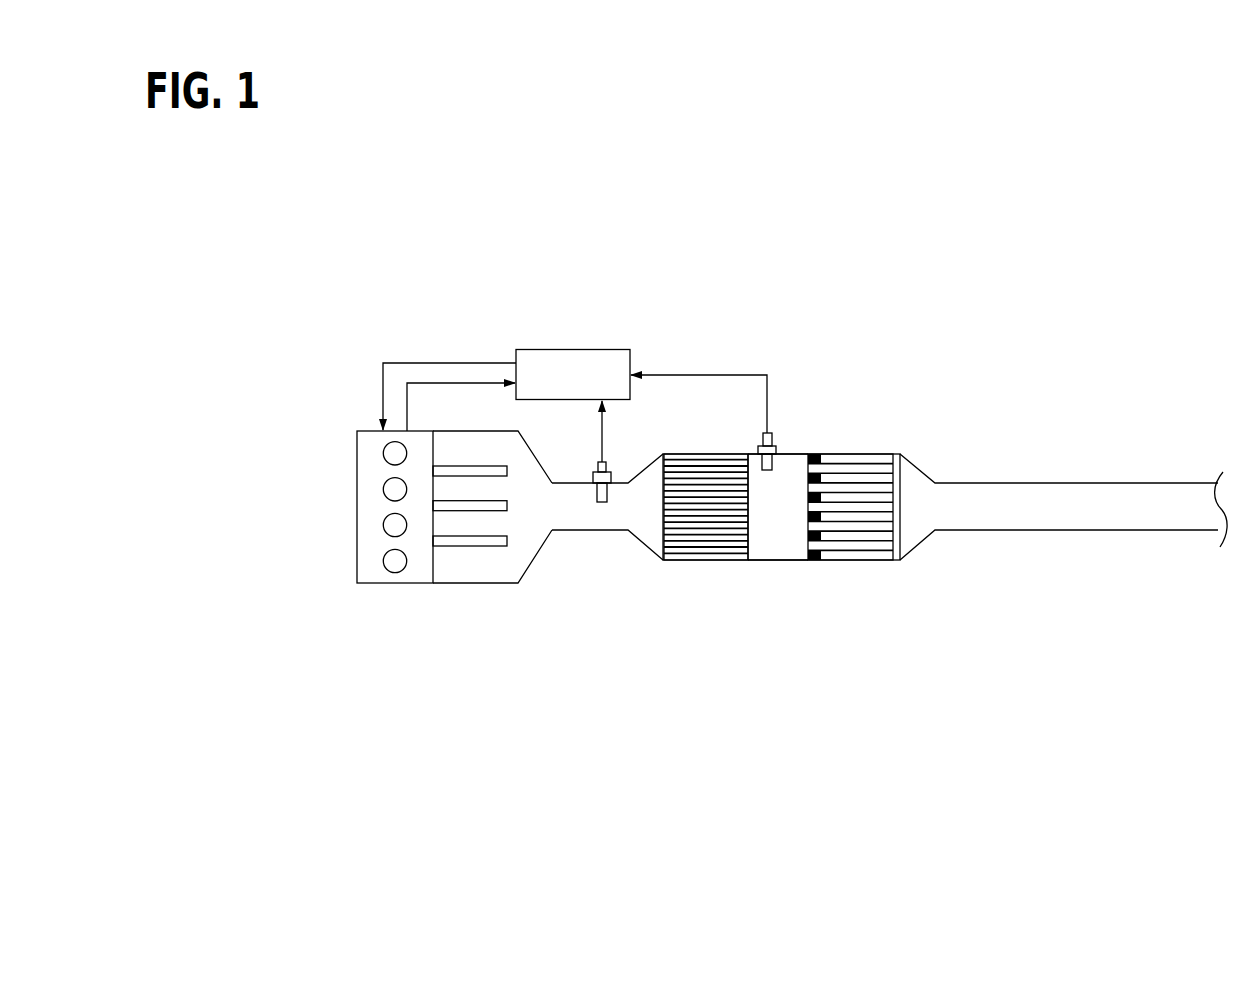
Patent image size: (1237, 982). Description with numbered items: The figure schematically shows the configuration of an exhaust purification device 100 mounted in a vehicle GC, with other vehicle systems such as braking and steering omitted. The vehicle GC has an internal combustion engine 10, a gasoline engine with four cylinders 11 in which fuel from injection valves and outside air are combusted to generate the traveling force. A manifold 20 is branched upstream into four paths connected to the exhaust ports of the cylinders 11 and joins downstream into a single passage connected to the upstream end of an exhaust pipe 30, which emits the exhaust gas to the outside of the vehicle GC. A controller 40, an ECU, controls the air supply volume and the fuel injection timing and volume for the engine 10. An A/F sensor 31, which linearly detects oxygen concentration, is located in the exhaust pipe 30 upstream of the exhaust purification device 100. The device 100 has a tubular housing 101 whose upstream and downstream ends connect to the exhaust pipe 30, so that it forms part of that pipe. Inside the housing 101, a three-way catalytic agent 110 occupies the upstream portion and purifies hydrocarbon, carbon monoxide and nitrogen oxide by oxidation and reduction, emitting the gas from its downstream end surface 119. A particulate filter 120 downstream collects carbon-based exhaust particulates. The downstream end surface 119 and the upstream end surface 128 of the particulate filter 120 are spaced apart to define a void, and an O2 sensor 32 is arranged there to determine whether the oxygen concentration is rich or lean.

The vehicle GC is at (393, 300).
The internal combustion engine 10 is at (393, 583).
The cylinders 11 is at (383, 453).
The manifold 20 is at (475, 583).
The exhaust pipe 30 is at (582, 530).
The A/F sensor 31 is at (611, 471).
The O2 sensor 32 is at (776, 445).
The controller 40 is at (578, 349).
The exhaust purification device 100 is at (866, 430).
The three-way catalytic agent 110 is at (707, 543).
The downstream end surface 119 is at (750, 537).
The housing 101 is at (777, 560).
The particulate filter 120 is at (853, 536).
The upstream end surface 128 is at (805, 518).